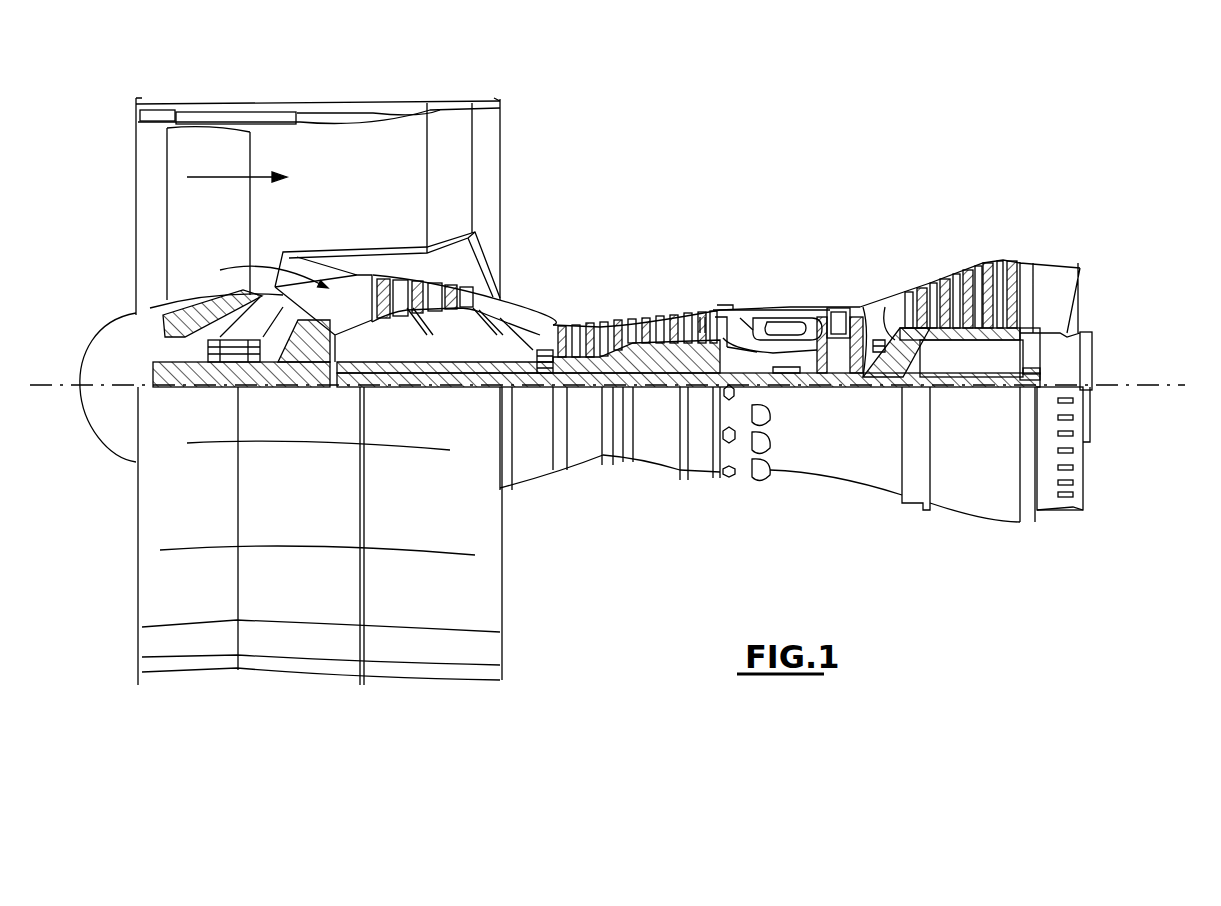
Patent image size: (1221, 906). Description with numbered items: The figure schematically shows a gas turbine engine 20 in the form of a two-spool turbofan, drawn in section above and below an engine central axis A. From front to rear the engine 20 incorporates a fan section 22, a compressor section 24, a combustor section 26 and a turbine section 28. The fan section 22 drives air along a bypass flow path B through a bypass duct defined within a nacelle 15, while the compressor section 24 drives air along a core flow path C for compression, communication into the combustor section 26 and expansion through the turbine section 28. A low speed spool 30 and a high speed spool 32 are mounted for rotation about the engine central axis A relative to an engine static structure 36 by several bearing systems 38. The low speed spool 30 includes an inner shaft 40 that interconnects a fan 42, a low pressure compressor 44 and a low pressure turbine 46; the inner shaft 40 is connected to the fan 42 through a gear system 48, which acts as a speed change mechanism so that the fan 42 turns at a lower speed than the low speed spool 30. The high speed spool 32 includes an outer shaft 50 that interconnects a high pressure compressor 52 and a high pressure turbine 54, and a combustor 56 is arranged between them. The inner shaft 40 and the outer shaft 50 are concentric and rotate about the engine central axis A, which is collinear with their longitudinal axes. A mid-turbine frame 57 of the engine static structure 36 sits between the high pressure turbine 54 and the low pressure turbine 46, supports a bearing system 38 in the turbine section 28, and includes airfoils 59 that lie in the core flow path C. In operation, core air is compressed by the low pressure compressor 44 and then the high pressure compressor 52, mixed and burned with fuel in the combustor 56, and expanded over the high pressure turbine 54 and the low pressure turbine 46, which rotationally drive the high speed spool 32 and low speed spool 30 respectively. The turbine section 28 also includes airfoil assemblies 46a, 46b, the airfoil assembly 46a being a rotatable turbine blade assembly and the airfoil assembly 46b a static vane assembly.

The gas turbine engine 20 is at (785, 147).
The nacelle 15 is at (320, 107).
The fan section 22 is at (250, 90).
The compressor section 24 is at (552, 290).
The combustor section 26 is at (774, 275).
The turbine section 28 is at (924, 241).
The low speed spool 30 is at (658, 395).
The high speed spool 32 is at (702, 335).
The engine static structure 36 is at (698, 477).
The bearing systems 38 is at (883, 372).
The inner shaft 40 is at (520, 390).
The fan 42 is at (222, 232).
The low pressure compressor 44 is at (423, 300).
The low pressure turbine 46 is at (978, 267).
The airfoil assembly 46a is at (995, 267).
The airfoil assembly 46b is at (977, 267).
The gear system 48 is at (326, 370).
The outer shaft 50 is at (773, 372).
The high pressure compressor 52 is at (613, 357).
The high pressure turbine 54 is at (838, 307).
The combustor 56 is at (774, 330).
The mid-turbine frame 57 is at (884, 290).
The airfoils 59 is at (905, 345).
The engine central axis A is at (1177, 386).
The bypass flow path B is at (224, 176).
The core flow path C is at (264, 272).